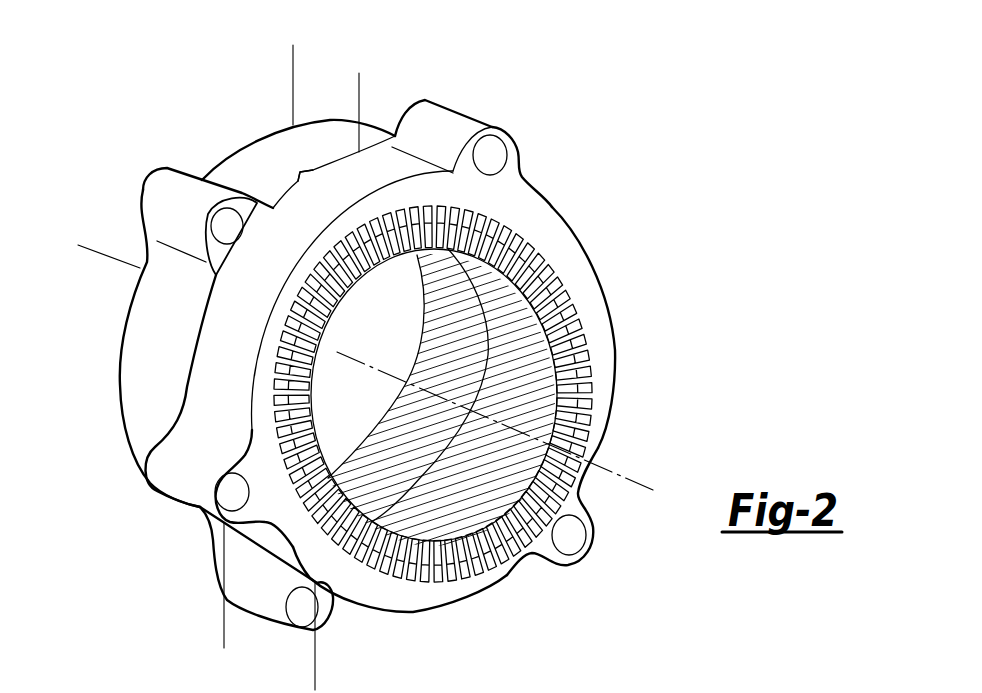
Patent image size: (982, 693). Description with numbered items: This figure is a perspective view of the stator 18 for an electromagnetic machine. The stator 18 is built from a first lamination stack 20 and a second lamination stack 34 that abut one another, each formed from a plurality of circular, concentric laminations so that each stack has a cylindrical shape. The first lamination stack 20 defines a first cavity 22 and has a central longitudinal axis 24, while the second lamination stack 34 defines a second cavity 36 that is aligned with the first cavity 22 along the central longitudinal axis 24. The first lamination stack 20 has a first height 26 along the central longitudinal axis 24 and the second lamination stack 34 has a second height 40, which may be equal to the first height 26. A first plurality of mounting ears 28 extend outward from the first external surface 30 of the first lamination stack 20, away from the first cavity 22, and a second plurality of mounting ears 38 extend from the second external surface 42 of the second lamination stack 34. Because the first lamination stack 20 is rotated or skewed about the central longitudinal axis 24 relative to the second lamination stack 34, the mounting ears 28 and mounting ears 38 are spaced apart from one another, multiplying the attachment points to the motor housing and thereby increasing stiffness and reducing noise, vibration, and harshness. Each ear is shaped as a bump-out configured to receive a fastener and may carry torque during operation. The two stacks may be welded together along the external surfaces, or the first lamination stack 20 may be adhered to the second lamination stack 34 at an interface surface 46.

The stator 18 is at (86, 109).
The first lamination stack 20 is at (243, 149).
The first cavity 22 is at (400, 344).
The central longitudinal axis 24 is at (620, 470).
The first height 26 is at (392, 118).
The first plurality of mounting ears 28 is at (148, 187).
The first external surface 30 is at (181, 313).
The second lamination stack 34 is at (580, 232).
The second cavity 36 is at (472, 511).
The second plurality of mounting ears 38 is at (468, 112).
The second height 40 is at (348, 680).
The second external surface 42 is at (269, 292).
The interface surface 46 is at (313, 171).